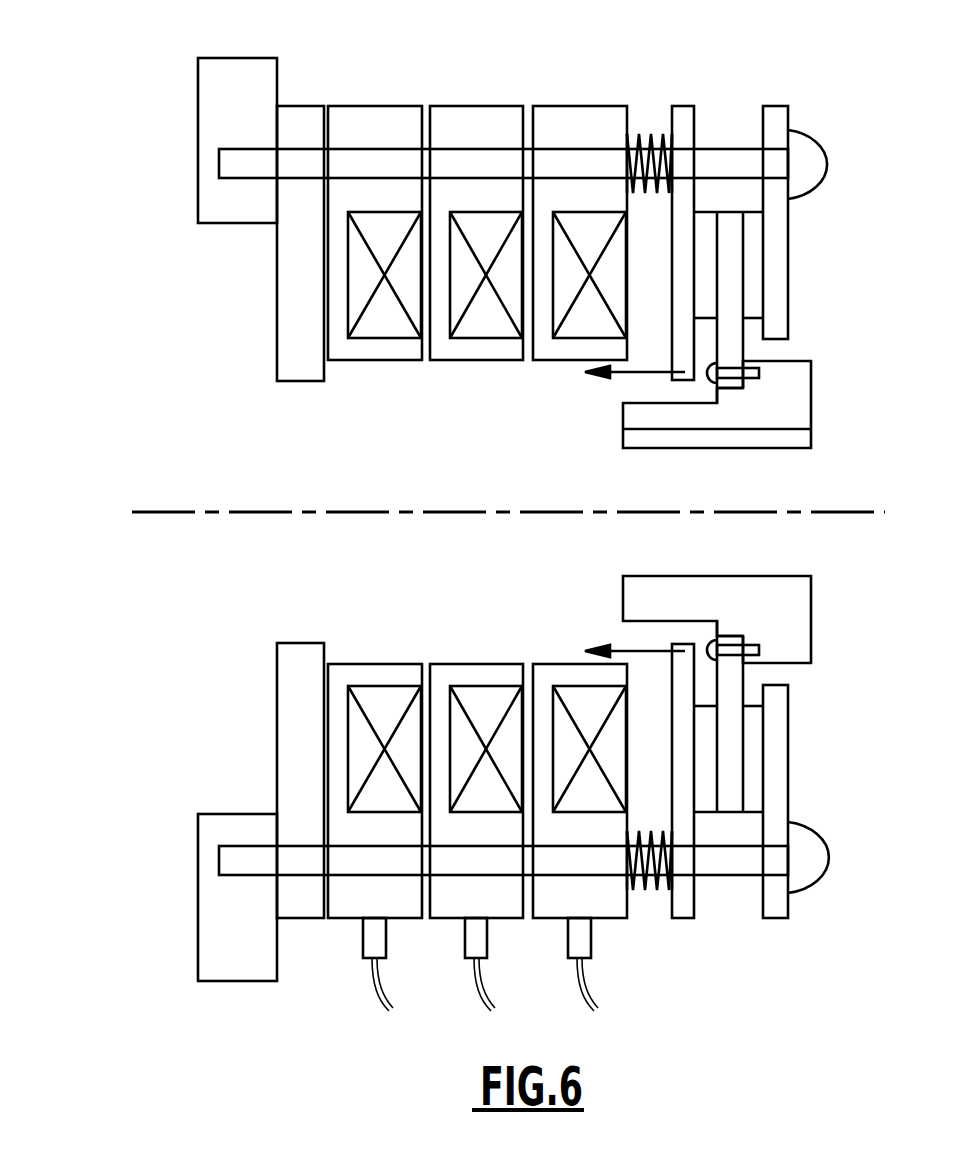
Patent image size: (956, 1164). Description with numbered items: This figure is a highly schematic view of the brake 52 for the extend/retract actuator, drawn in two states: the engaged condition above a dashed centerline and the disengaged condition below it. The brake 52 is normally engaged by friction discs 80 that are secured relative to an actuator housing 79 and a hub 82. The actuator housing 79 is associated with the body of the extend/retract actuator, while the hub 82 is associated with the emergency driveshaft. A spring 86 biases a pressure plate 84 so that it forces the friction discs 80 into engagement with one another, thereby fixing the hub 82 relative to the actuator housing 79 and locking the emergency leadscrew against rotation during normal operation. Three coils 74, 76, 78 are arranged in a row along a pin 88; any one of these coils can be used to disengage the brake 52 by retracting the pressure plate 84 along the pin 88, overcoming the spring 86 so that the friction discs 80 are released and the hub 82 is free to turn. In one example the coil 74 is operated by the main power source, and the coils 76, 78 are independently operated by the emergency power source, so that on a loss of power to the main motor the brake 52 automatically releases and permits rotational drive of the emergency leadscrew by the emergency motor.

The brake 52 is at (120, 88).
The actuator housing 79 is at (258, 97).
The pin 88 is at (483, 165).
The spring 86 is at (648, 133).
The pressure plate 84 is at (685, 297).
The friction discs 80 is at (752, 234).
The hub 82 is at (782, 610).
The coil 74 is at (352, 909).
The coil 78 is at (499, 910).
The coil 76 is at (612, 905).